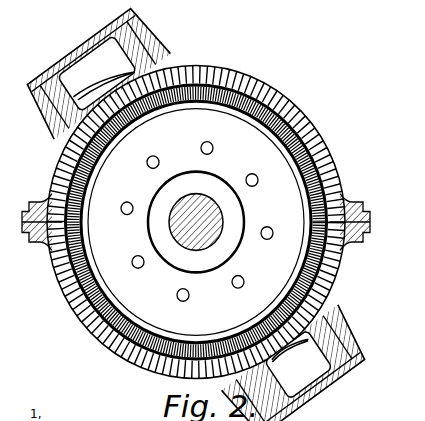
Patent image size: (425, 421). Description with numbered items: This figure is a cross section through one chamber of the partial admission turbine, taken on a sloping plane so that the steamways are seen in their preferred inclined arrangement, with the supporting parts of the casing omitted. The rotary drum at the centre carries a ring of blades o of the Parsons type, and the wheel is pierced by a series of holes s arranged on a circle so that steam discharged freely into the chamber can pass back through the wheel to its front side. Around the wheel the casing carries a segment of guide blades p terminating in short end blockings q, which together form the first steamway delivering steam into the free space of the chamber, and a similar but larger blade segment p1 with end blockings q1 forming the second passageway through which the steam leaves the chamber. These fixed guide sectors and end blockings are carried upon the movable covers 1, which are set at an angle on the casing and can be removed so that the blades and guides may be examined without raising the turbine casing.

The movable cover 1 is at (87, 47).
The segment of guide blades p is at (276, 357).
The larger blade segment p1 is at (111, 115).
The end blocking q is at (286, 310).
The end blocking q1 is at (157, 98).
The ring of blades o is at (284, 133).
The hole s is at (149, 167).